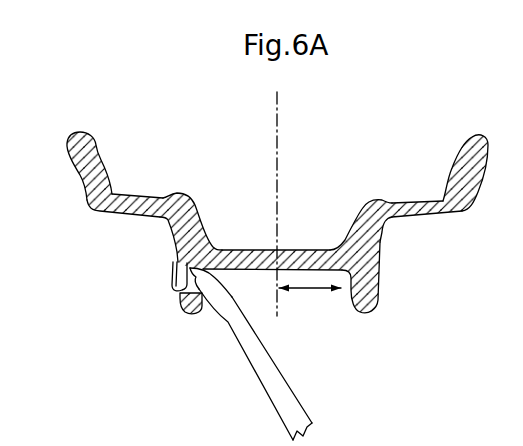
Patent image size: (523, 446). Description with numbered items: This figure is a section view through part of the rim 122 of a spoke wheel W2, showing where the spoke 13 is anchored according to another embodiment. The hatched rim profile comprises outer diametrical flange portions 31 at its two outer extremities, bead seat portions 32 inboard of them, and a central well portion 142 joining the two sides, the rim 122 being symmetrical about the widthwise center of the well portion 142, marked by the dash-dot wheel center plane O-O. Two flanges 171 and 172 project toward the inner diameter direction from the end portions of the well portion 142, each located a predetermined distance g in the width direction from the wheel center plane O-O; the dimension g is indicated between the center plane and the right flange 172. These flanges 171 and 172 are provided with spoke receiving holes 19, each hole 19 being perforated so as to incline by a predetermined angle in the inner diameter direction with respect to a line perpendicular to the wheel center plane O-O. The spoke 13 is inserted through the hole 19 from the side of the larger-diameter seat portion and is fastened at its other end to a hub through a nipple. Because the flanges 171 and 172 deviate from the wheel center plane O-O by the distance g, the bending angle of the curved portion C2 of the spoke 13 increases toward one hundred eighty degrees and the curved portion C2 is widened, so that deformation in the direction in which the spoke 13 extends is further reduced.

The outer diametrical flange portion 31 is at (100, 146).
The bead seat portion 32 is at (136, 206).
The well portion 142 is at (297, 257).
The rim 122 is at (386, 242).
The flange 172 is at (367, 300).
The flange 171 is at (180, 308).
The curved portion C2 is at (208, 297).
The spoke receiving hole 19 is at (212, 272).
The spoke 13 is at (283, 393).
The wheel center plane O is at (276, 209).
The predetermined distance g is at (310, 300).
The spoke wheel W2 is at (208, 127).